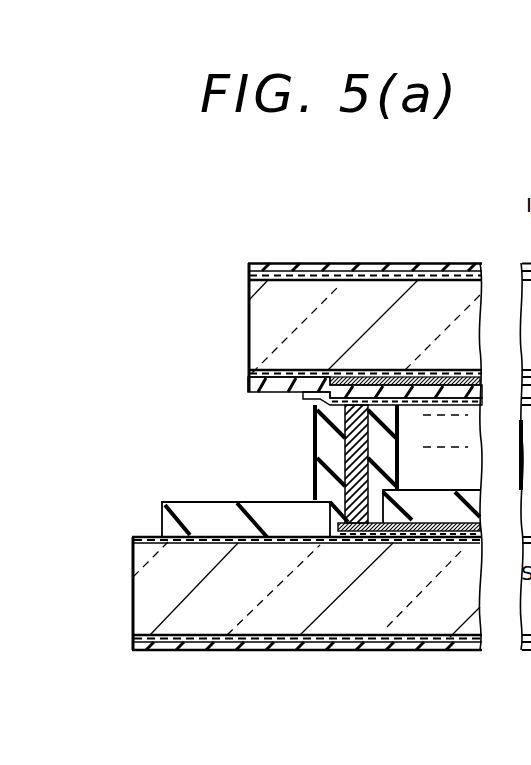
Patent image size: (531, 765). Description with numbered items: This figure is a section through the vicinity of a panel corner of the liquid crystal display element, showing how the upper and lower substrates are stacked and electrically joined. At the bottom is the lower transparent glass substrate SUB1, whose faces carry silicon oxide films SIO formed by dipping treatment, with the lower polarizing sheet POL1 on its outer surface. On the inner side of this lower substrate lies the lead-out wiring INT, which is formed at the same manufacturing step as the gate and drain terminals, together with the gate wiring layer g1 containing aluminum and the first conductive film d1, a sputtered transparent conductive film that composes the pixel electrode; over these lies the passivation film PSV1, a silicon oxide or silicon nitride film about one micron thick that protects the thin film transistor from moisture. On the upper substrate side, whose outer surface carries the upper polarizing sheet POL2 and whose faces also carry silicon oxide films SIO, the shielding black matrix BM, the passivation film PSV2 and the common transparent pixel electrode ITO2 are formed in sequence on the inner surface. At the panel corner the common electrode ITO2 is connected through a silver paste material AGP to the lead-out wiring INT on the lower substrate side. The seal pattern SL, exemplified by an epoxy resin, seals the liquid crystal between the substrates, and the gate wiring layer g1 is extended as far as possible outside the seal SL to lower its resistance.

The polarizing sheet POL2 is at (373, 263).
The silicon oxide film SIO is at (522, 262).
The black matrix BM is at (488, 376).
The passivation film PSV2 is at (248, 383).
The common transparent pixel electrode ITO2 is at (312, 405).
The silver paste material AGP is at (343, 467).
The passivation film PSV1 is at (162, 517).
The seal pattern SL is at (399, 432).
The lead-out wiring INT is at (353, 538).
The gate wiring layer g1 is at (412, 537).
The first conductive film d1 is at (517, 522).
The lower transparent glass substrate SUB1 is at (133, 590).
The polarizing sheet POL1 is at (163, 650).